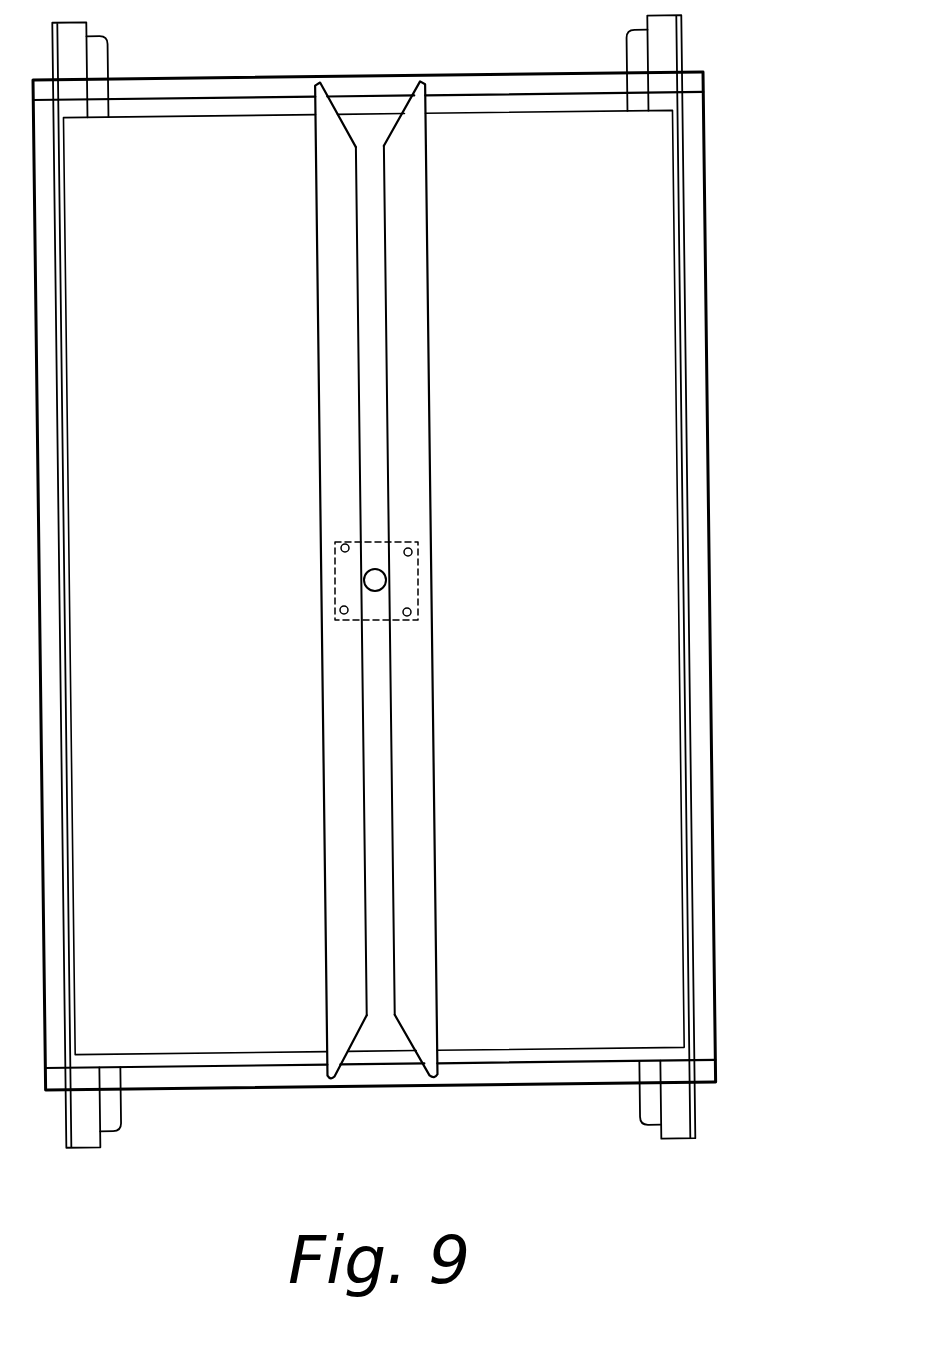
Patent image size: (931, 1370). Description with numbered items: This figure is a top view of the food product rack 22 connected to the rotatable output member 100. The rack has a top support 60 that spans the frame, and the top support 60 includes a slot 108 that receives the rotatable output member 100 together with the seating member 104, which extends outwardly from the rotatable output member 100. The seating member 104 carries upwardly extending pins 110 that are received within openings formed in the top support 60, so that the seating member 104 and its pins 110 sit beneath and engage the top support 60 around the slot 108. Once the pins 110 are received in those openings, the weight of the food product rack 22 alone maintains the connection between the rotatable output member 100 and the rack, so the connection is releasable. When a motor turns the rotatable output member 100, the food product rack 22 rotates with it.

The food product rack 22 is at (710, 563).
The top support 60 is at (431, 447).
The rotatable output member 100 is at (387, 583).
The seating member 104 is at (378, 615).
The slot 108 is at (376, 820).
The pins 110 is at (343, 550).